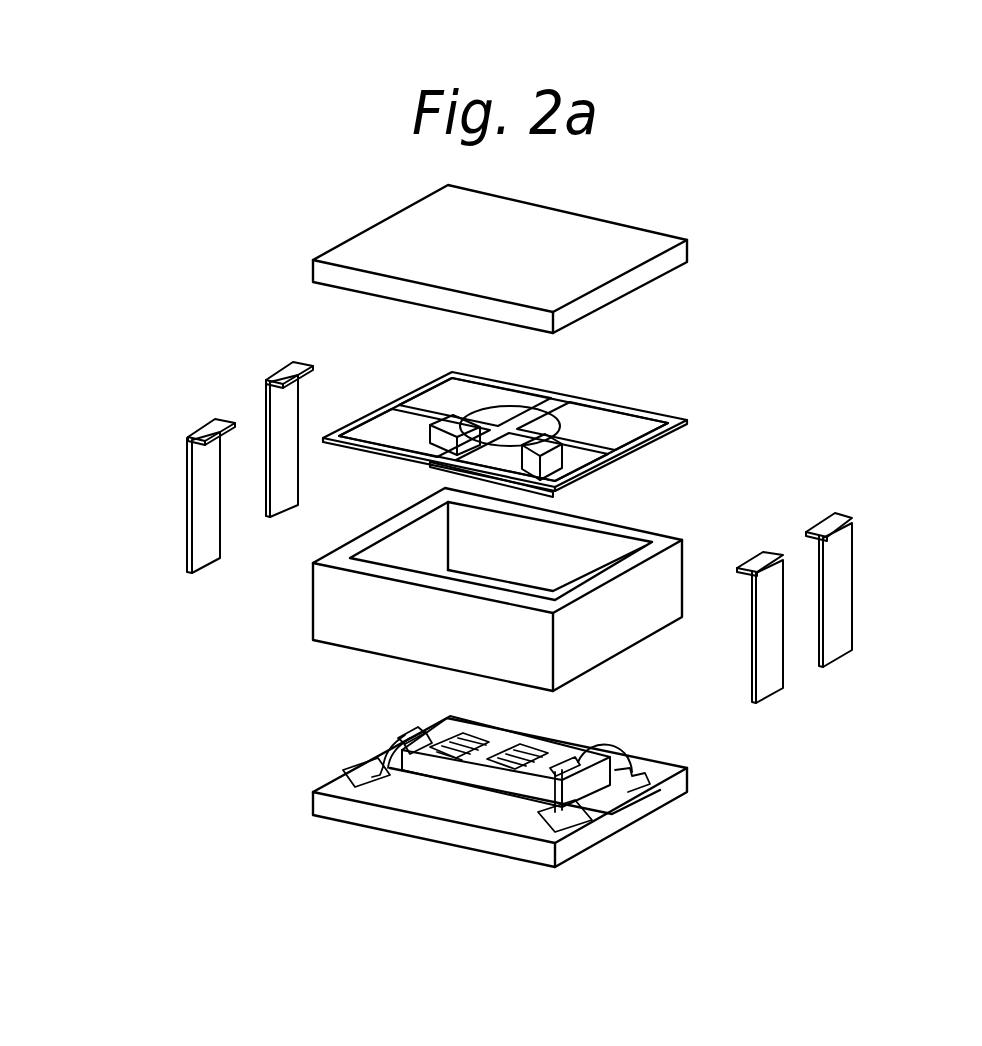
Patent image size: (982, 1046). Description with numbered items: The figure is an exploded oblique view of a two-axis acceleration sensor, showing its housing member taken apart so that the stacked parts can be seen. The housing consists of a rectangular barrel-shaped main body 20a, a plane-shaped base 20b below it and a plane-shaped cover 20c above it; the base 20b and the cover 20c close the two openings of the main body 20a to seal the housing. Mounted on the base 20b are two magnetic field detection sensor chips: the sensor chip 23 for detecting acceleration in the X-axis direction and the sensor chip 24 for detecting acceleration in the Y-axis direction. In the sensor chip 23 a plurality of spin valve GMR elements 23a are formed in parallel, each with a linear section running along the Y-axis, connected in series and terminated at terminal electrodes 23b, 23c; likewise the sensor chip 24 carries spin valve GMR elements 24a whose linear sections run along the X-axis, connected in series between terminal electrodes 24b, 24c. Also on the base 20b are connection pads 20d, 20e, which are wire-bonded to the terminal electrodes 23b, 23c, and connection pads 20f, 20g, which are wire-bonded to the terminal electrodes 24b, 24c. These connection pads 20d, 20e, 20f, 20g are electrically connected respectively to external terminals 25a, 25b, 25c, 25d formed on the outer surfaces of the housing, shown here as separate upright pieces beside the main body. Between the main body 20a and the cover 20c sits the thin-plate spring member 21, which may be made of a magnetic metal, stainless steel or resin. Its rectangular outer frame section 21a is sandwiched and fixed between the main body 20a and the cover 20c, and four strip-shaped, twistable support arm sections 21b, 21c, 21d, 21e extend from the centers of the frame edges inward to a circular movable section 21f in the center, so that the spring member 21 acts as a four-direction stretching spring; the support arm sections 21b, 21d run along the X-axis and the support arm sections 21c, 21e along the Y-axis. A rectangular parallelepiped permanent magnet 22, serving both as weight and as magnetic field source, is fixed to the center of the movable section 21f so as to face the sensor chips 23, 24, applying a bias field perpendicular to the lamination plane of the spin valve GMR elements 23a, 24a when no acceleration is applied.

The main body 20a is at (682, 568).
The base 20b is at (687, 772).
The cover 20c is at (655, 270).
The connection pad 20d is at (580, 820).
The connection pad 20e is at (622, 783).
The connection pad 20f is at (353, 770).
The connection pad 20g is at (447, 718).
The spring member 21 is at (686, 406).
The outer frame section 21a is at (637, 412).
The support arm section 21b is at (435, 405).
The support arm section 21c is at (542, 405).
The support arm section 21d is at (593, 450).
The support arm section 21e is at (453, 440).
The movable section 21f is at (500, 420).
The permanent magnet 22 is at (587, 433).
The sensor chip 23 is at (530, 788).
The spin valve GMR element 23a is at (507, 773).
The terminal electrode 23b is at (577, 817).
The terminal electrode 23c is at (585, 752).
The sensor chip 24 is at (413, 762).
The spin valve GMR element 24a is at (453, 760).
The terminal electrode 24b is at (403, 737).
The terminal electrode 24c is at (410, 735).
The external terminal 25a is at (770, 672).
The external terminal 25b is at (840, 610).
The external terminal 25c is at (202, 498).
The external terminal 25d is at (280, 433).